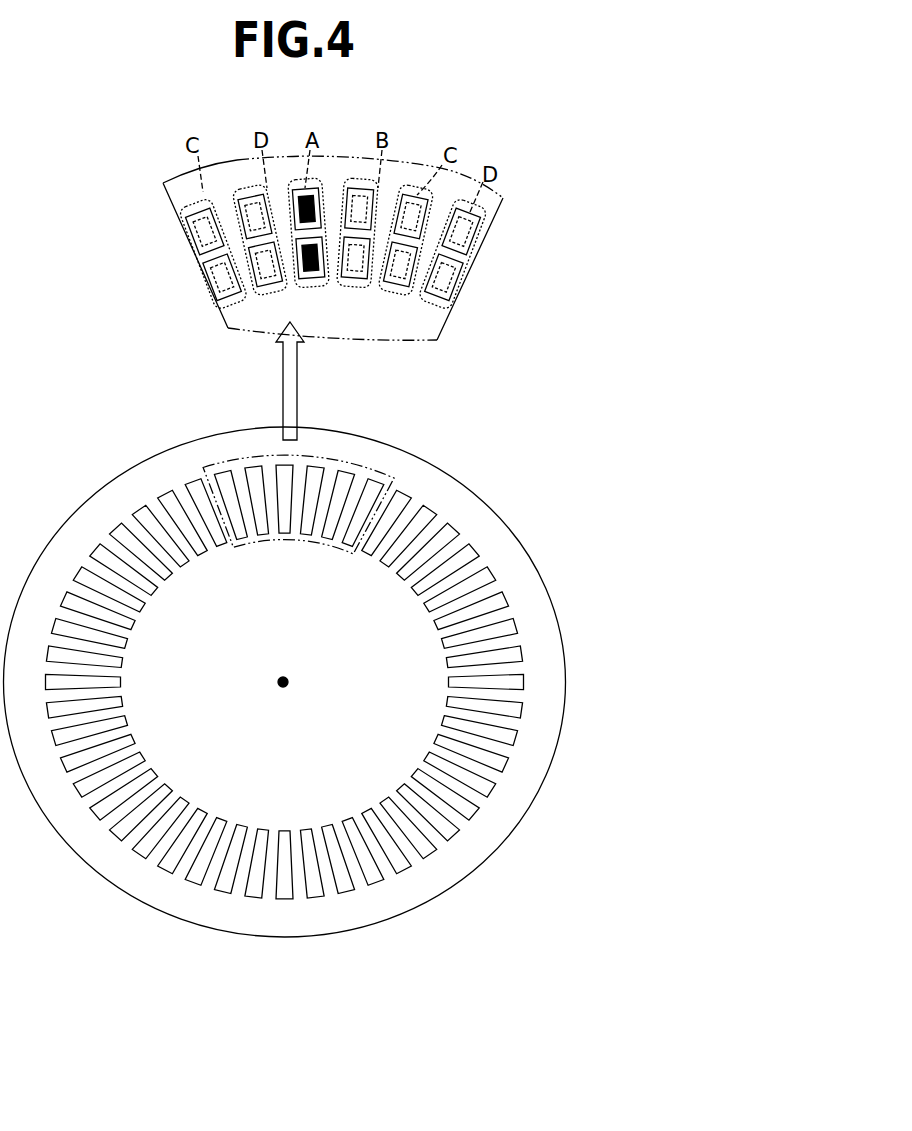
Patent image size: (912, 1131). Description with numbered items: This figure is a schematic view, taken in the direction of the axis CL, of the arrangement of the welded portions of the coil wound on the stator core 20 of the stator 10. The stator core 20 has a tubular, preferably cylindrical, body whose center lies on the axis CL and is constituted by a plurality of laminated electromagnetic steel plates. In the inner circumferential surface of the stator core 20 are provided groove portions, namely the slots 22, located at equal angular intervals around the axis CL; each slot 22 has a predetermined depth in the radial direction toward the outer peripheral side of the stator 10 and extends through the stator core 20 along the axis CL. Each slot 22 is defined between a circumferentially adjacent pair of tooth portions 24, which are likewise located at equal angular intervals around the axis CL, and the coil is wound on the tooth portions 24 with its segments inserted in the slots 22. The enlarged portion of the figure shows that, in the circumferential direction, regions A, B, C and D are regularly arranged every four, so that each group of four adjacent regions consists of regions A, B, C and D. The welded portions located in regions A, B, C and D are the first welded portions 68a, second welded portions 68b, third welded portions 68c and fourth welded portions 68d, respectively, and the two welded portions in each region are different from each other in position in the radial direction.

The stator 10 is at (578, 560).
The stator core 20 is at (532, 617).
The slot 22 is at (416, 516).
The tooth portion 24 is at (428, 540).
The axis CL is at (288, 682).
The first welded portion 68a is at (317, 211).
The second welded portion 68b is at (373, 208).
The third welded portion 68c is at (212, 214).
The fourth welded portion 68d is at (268, 206).